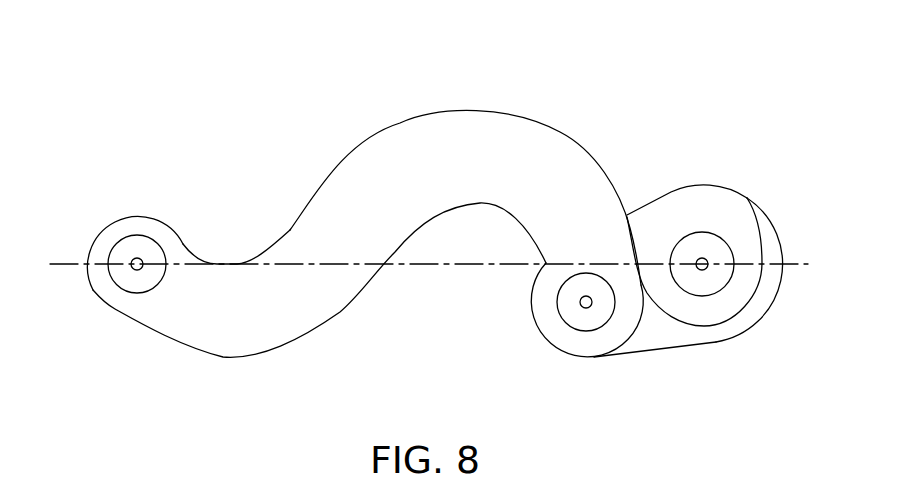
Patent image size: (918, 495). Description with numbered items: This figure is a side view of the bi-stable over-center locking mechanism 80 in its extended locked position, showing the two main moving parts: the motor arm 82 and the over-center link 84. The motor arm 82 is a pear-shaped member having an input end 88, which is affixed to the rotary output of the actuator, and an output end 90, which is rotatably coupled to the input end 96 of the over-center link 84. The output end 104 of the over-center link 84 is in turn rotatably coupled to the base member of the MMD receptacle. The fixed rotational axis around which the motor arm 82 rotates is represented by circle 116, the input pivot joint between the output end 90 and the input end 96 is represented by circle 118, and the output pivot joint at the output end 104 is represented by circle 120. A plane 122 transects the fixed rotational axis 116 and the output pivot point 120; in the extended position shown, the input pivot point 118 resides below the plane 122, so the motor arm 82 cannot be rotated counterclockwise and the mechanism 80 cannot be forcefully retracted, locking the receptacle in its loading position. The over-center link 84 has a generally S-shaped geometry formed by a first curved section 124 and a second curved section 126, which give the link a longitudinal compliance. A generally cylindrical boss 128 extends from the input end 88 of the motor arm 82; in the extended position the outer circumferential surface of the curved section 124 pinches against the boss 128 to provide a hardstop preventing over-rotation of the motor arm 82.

The over-center locking mechanism 80 is at (428, 247).
The motor arm 82 is at (640, 293).
The over-center link 84 is at (367, 199).
The input end 88 is at (705, 237).
The output end 90 is at (633, 348).
The input end 96 is at (570, 290).
The output end 104 is at (122, 236).
The fixed rotational axis 116 is at (701, 257).
The input pivot joint 118 is at (586, 295).
The output pivot joint 120 is at (137, 258).
The plane 122 is at (57, 268).
The first curved section 124 is at (560, 133).
The second curved section 126 is at (232, 277).
The boss 128 is at (723, 200).